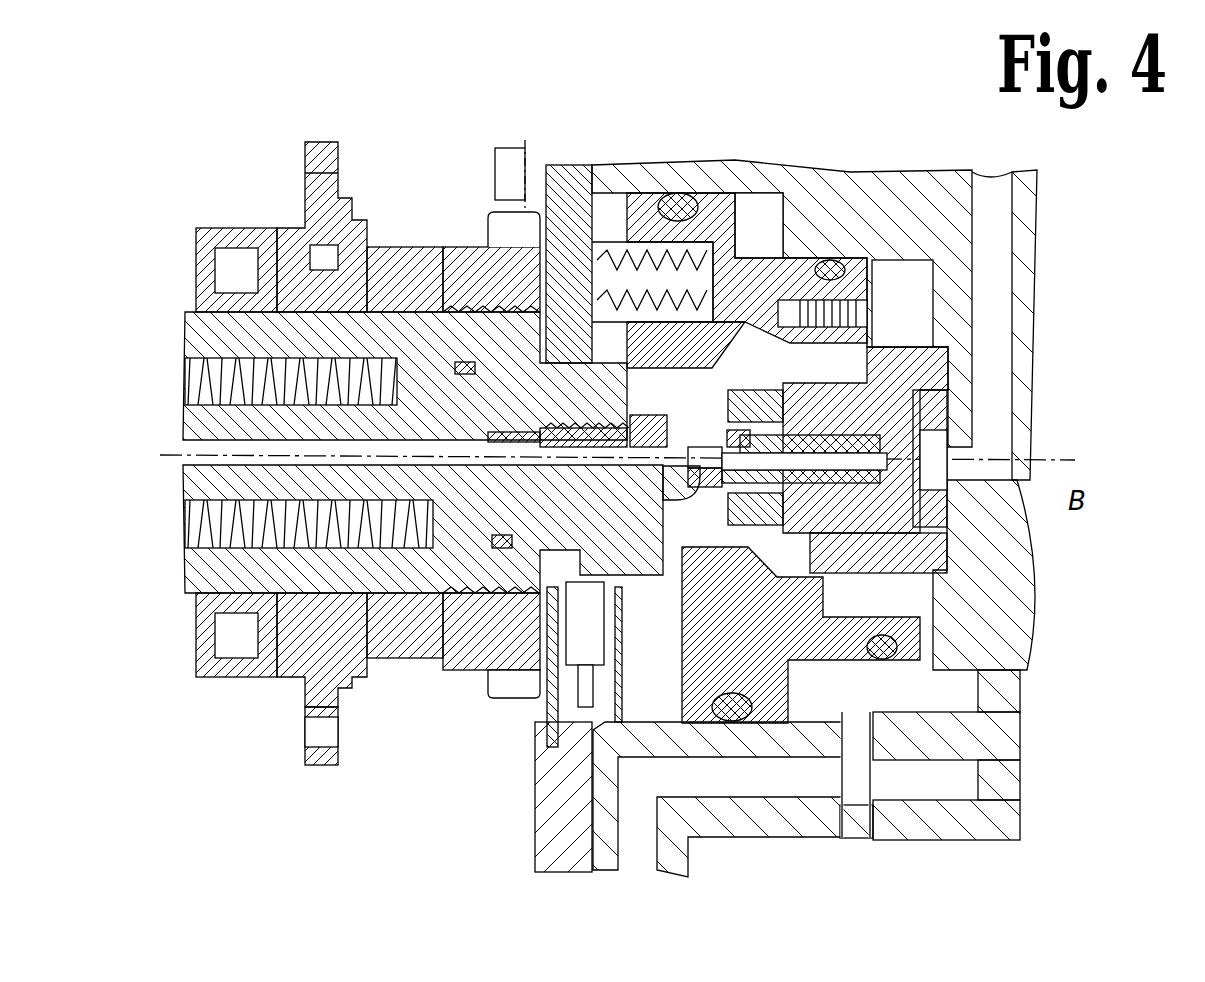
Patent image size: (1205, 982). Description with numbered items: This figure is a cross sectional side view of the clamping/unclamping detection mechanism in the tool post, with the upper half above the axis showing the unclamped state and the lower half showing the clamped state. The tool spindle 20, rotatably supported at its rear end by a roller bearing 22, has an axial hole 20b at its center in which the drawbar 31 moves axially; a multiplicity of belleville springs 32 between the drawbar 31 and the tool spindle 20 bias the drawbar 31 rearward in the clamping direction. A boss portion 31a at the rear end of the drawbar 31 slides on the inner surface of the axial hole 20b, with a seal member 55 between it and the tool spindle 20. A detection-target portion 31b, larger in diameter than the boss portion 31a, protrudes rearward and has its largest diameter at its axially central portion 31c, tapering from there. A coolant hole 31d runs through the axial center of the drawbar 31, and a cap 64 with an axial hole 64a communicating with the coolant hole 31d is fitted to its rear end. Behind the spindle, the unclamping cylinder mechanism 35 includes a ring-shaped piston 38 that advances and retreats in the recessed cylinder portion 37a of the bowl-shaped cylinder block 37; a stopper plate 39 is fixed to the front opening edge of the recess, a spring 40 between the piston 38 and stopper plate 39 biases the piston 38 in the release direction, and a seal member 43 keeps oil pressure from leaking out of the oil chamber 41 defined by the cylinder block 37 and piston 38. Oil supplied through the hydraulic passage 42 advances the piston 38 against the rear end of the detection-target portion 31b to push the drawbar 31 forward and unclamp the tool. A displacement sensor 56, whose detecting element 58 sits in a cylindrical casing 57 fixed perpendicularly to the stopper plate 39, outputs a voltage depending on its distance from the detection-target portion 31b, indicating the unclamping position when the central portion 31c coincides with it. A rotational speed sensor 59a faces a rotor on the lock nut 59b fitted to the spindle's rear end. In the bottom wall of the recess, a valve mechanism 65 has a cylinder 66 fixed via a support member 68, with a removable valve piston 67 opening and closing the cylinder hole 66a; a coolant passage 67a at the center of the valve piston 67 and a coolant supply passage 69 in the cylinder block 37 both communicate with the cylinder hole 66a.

The tool spindle 20 is at (383, 600).
The axial hole 20b is at (192, 548).
The roller bearing 22 is at (218, 680).
The drawbar 31 is at (180, 490).
The boss portion 31a is at (455, 600).
The detection-target portion 31b is at (622, 580).
The axially central portion 31c is at (625, 562).
The coolant hole 31d is at (435, 433).
The belleville springs 32 is at (190, 385).
The unclamping cylinder mechanism 35 is at (833, 118).
The cylinder block 37 is at (803, 162).
The recessed cylinder portion 37a is at (917, 185).
The piston 38 is at (747, 165).
The stopper plate 39 is at (537, 800).
The spring 40 is at (582, 190).
The oil chamber 41 is at (770, 225).
The hydraulic passage 42 is at (858, 790).
The seal member 43 is at (672, 193).
The seal member 55 is at (505, 540).
The displacement sensor 56 is at (801, 635).
The cylindrical casing 57 is at (622, 655).
The detecting element 58 is at (622, 672).
The rotational speed sensor 59a is at (492, 160).
The lock nut 59b is at (463, 247).
The cap 64 is at (655, 412).
The axial hole 64a is at (545, 425).
The valve mechanism 65 is at (772, 375).
The cylinder 66 is at (1010, 525).
The cylinder hole 66a is at (878, 360).
The valve piston 67 is at (722, 482).
The coolant passage 67a is at (718, 450).
The support member 68 is at (880, 240).
The coolant supply passage 69 is at (1002, 310).